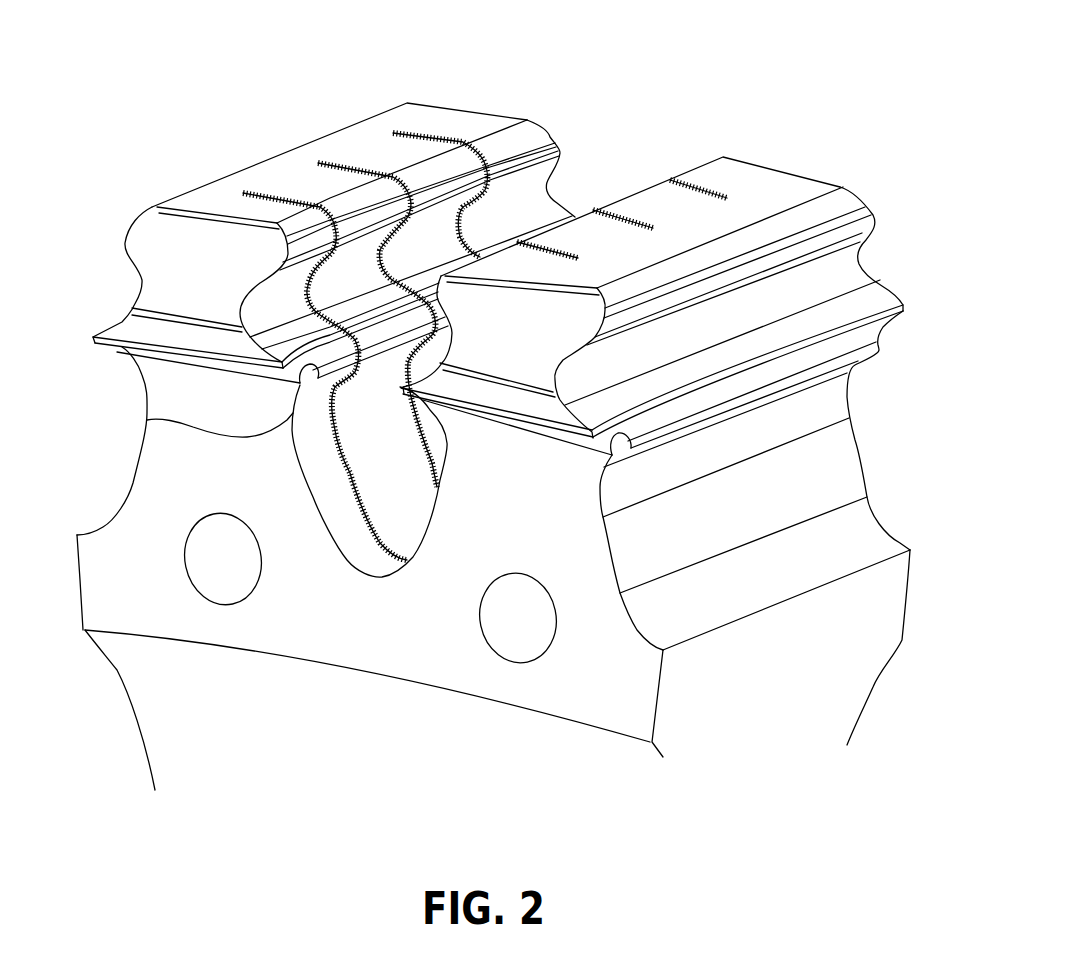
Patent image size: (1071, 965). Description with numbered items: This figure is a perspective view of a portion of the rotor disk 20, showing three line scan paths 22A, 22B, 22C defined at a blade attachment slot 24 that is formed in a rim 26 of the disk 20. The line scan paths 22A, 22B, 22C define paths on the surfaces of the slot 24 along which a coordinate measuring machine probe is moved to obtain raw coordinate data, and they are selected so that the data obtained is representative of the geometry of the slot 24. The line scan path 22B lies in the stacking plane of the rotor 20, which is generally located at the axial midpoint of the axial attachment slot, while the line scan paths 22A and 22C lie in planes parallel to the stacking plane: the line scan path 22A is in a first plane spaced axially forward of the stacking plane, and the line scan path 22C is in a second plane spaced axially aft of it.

The rotor disk 20 is at (690, 76).
The line scan path 22A is at (255, 192).
The line scan path 22B is at (330, 160).
The line scan path 22C is at (402, 130).
The blade attachment slot 24 is at (145, 418).
The rim 26 is at (158, 487).